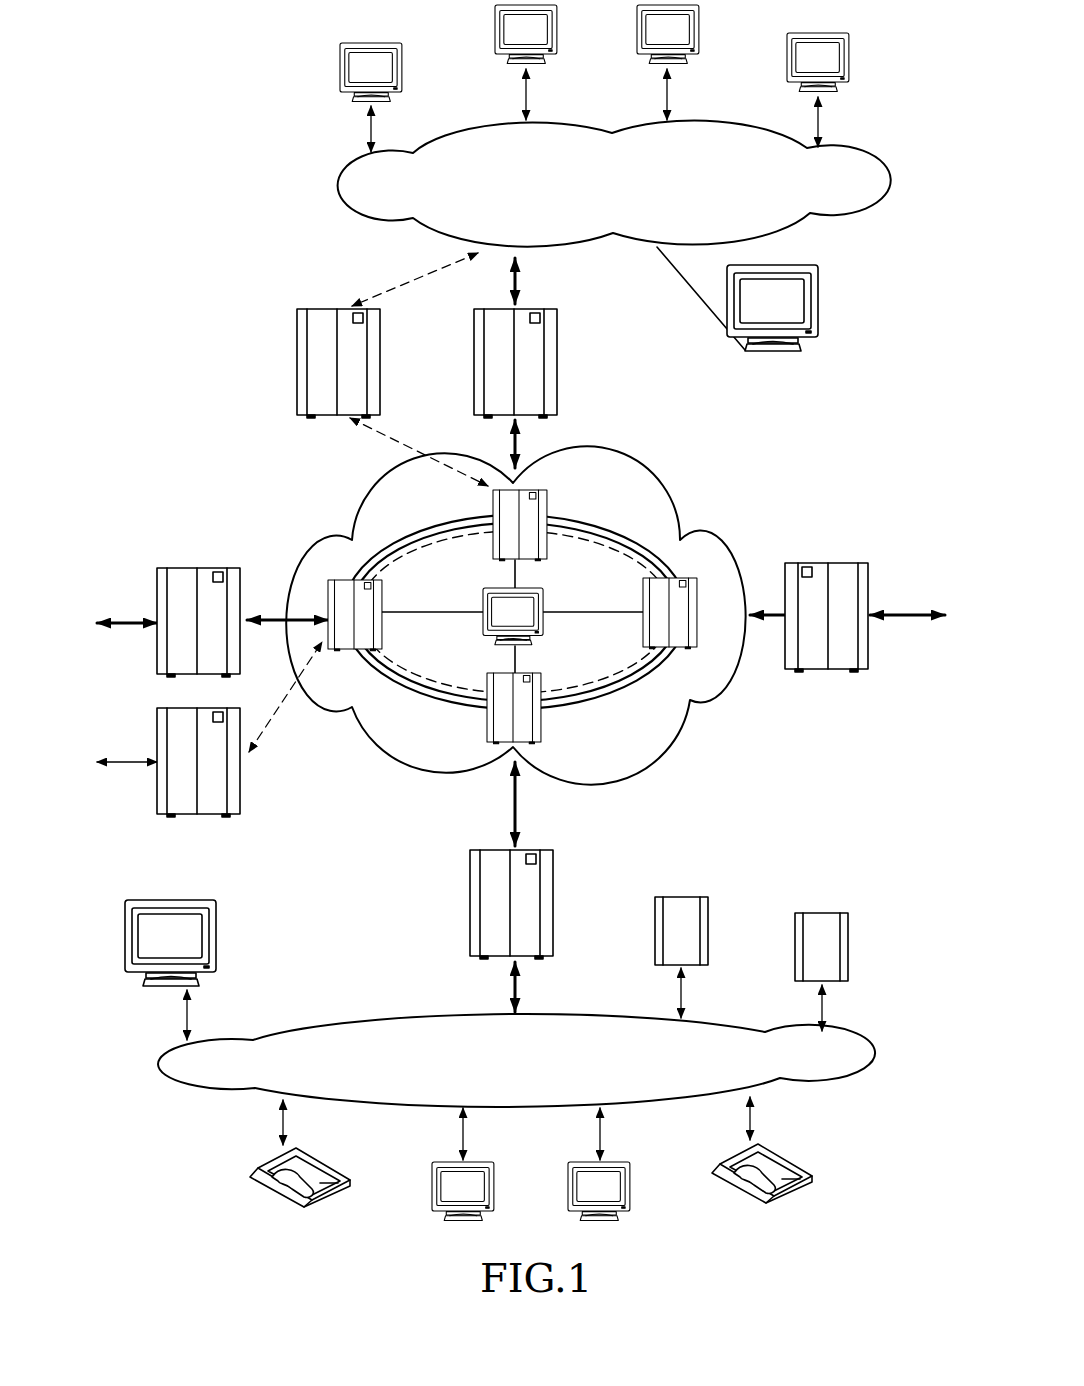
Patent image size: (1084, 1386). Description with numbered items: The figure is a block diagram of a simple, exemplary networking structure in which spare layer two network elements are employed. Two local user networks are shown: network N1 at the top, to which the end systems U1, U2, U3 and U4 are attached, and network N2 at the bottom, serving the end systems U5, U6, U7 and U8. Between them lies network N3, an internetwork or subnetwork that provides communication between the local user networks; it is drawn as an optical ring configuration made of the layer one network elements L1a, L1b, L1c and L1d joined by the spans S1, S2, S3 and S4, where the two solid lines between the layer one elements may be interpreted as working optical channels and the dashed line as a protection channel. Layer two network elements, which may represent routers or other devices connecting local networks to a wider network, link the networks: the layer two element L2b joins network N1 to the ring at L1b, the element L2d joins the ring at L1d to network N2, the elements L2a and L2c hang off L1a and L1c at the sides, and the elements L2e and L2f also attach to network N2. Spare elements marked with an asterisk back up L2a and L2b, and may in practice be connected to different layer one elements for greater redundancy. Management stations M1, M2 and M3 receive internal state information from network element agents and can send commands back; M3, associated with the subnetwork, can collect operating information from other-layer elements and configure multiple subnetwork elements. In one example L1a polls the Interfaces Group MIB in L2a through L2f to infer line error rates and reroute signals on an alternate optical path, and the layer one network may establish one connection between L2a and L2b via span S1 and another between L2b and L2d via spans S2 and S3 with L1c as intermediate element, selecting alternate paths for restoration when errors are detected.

The end system U1 is at (402, 65).
The end system U2 is at (557, 27).
The end system U3 is at (699, 35).
The end system U4 is at (848, 56).
The end system U5 is at (312, 1157).
The end system U6 is at (494, 1178).
The end system U7 is at (630, 1185).
The end system U8 is at (780, 1150).
The network 1 N1 is at (888, 170).
The network 2 N2 is at (877, 1053).
The network 3 N3 is at (647, 750).
The management station 1 M1 is at (818, 300).
The management station 2 M2 is at (217, 936).
The management station 3 M3 is at (543, 608).
The layer 2 network element L2a is at (157, 595).
The layer 2 network element L2b is at (474, 340).
The layer 2 network element L2c is at (870, 585).
The layer 2 network element L2d is at (470, 907).
The layer 2 network element L2e is at (655, 930).
The layer 2 network element L2f is at (795, 945).
The layer 1 network element L1a is at (328, 598).
The layer 1 network element L1b is at (493, 504).
The layer 1 network element L1c is at (697, 590).
The layer 1 network element L1d is at (487, 722).
The span S1 is at (429, 557).
The span S2 is at (601, 557).
The span S3 is at (601, 662).
The span S4 is at (429, 669).